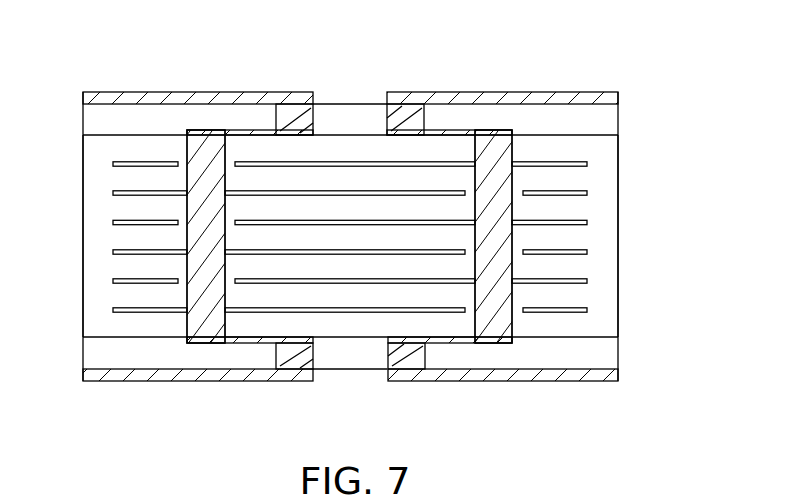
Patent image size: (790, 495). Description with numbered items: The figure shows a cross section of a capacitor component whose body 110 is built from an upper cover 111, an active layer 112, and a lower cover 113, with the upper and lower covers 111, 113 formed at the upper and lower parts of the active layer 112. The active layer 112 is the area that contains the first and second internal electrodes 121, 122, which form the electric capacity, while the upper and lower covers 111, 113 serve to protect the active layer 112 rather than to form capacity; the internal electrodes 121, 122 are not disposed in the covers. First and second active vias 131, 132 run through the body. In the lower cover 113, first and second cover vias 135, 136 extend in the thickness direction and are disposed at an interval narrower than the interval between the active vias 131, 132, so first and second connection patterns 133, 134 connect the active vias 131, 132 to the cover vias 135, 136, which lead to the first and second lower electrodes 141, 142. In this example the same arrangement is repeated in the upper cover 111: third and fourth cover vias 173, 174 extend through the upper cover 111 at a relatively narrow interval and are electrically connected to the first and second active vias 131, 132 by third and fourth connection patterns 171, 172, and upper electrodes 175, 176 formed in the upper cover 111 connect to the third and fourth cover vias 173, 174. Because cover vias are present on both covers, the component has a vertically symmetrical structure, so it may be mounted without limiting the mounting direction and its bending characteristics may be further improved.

The body 110 is at (700, 110).
The upper cover 111 is at (617, 114).
The active layer 112 is at (617, 224).
The lower cover 113 is at (617, 346).
The first internal electrode 121 is at (113, 192).
The second internal electrode 122 is at (113, 163).
The first active via 131 is at (198, 150).
The second active via 132 is at (505, 148).
The first connection pattern 133 is at (242, 341).
The second connection pattern 134 is at (463, 341).
The first cover via 135 is at (297, 358).
The second cover via 136 is at (403, 350).
The first lower electrode 141 is at (132, 372).
The second lower electrode 142 is at (567, 372).
The third connection pattern 171 is at (205, 131).
The fourth connection pattern 172 is at (497, 130).
The third cover via 173 is at (294, 115).
The fourth cover via 174 is at (403, 117).
The upper electrode 175 is at (220, 97).
The upper electrode 176 is at (460, 97).